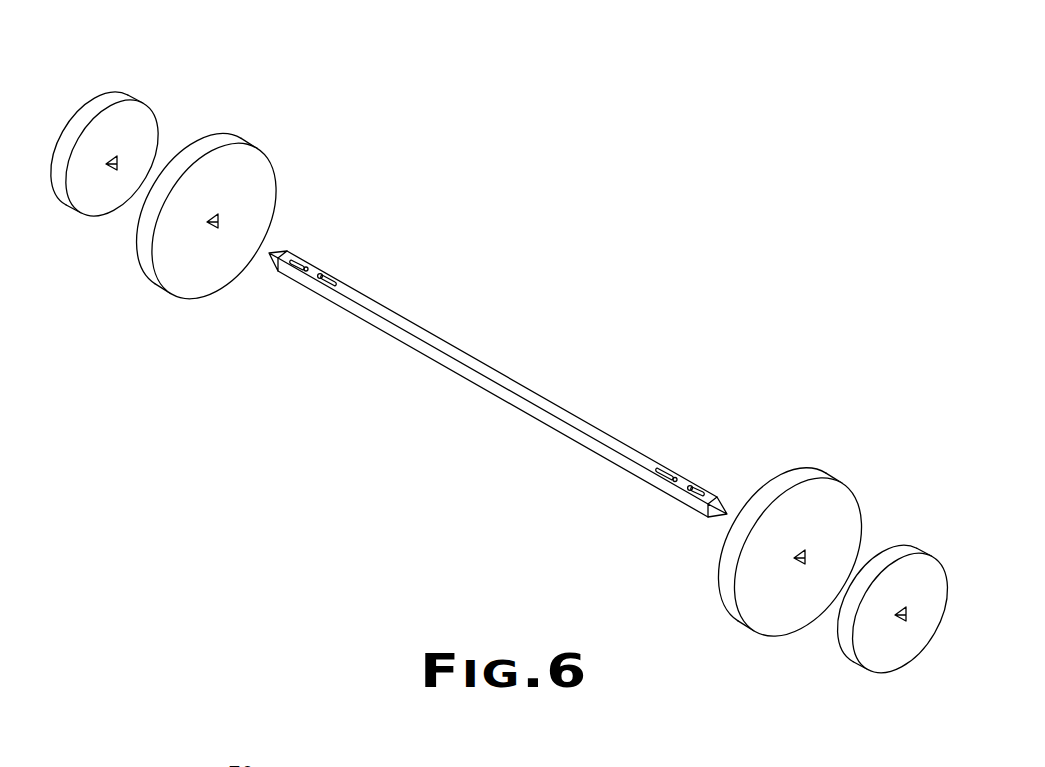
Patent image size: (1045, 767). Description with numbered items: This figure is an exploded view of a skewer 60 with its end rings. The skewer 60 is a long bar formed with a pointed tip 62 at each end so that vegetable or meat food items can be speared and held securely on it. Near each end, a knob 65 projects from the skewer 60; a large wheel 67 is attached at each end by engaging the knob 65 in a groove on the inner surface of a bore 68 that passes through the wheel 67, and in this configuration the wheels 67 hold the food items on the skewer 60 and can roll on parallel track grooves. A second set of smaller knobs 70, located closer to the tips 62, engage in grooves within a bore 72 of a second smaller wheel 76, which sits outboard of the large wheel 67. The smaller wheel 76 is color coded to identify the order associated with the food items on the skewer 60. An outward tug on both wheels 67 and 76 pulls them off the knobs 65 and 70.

The skewer 60 is at (455, 346).
The pointed tip 62 is at (270, 252).
The knob 65 is at (289, 266).
The large wheel 67 is at (263, 172).
The bore 68 is at (212, 232).
The smaller knob 70 is at (338, 282).
The bore 72 is at (108, 168).
The smaller wheel 76 is at (148, 135).